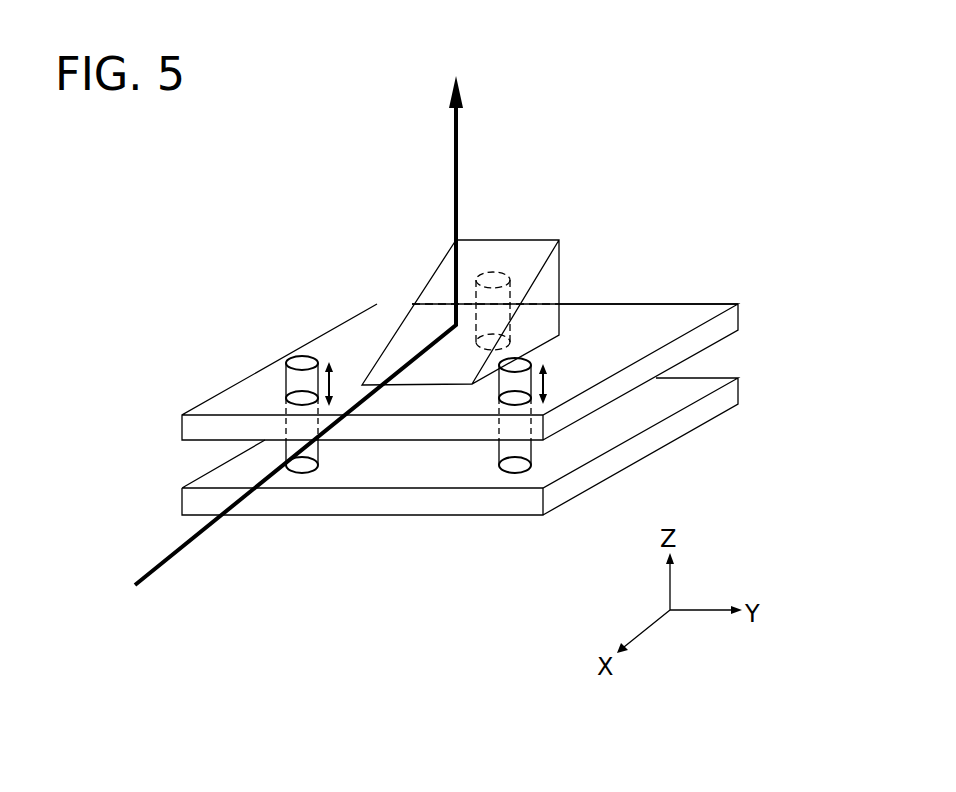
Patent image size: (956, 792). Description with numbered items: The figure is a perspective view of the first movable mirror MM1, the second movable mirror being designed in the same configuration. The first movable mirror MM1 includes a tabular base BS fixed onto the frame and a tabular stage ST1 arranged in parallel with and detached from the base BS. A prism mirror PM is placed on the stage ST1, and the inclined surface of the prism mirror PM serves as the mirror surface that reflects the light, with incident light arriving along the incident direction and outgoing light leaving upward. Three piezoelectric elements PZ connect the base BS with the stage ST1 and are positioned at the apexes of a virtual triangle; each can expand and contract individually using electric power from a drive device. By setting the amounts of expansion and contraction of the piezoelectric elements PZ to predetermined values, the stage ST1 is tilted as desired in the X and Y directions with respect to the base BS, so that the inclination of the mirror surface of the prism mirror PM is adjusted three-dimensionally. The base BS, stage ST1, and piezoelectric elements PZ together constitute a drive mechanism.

The first movable mirror MM1 is at (266, 217).
The piezoelectric elements PZ is at (497, 272).
The prism mirror PM is at (560, 250).
The stage ST1 is at (740, 313).
The base BS is at (658, 450).